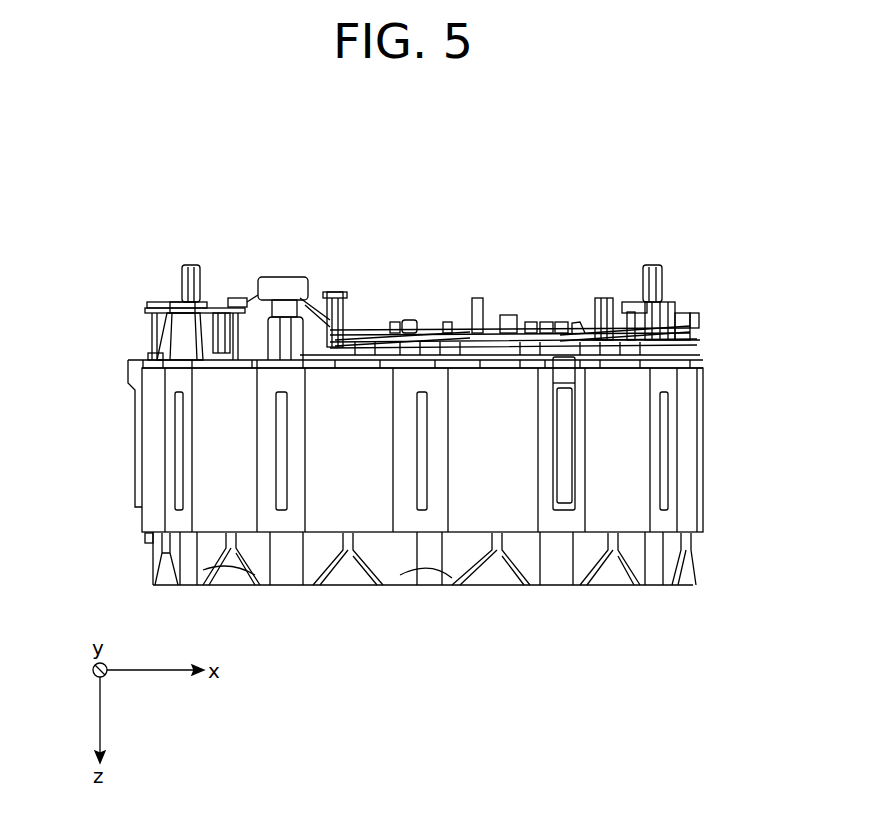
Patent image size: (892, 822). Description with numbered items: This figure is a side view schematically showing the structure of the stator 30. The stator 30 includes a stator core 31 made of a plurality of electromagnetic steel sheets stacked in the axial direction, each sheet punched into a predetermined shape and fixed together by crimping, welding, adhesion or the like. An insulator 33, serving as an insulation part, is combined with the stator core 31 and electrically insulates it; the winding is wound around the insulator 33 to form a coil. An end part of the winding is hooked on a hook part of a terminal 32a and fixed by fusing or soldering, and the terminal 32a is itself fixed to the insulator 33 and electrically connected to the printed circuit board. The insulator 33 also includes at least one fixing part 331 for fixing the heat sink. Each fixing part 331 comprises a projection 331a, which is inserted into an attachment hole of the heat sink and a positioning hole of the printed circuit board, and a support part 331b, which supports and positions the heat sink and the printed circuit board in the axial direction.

The stator 30 is at (418, 198).
The stator core 31 is at (703, 446).
The terminal 32a is at (286, 283).
The insulator 33 is at (704, 312).
The fixing part 331 is at (238, 215).
The projection 331a is at (187, 272).
The support part 331b is at (177, 300).